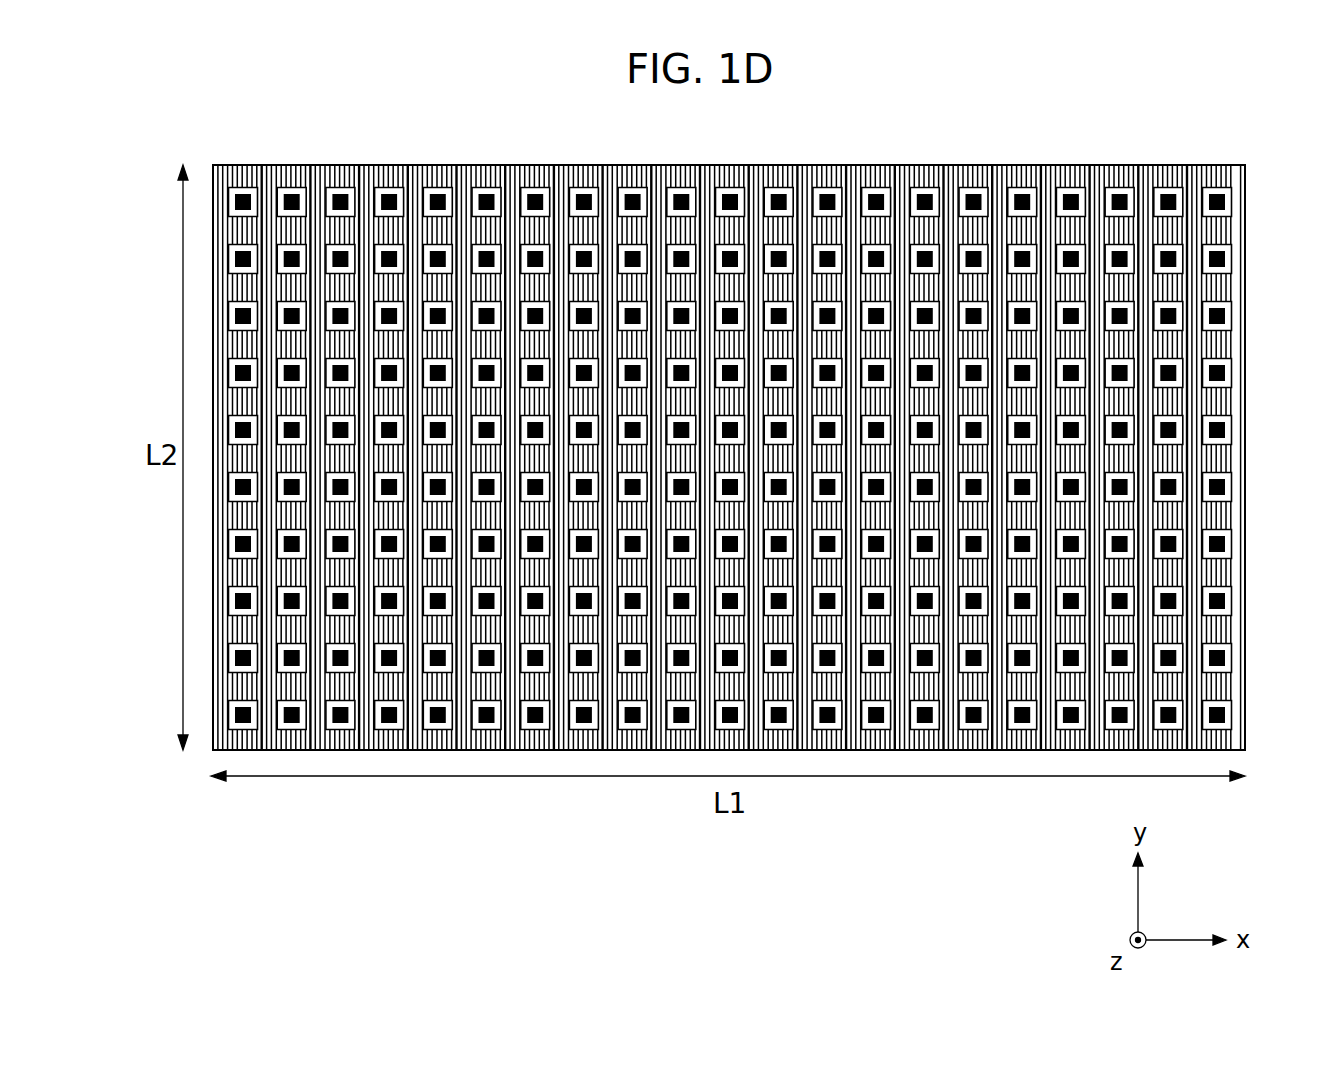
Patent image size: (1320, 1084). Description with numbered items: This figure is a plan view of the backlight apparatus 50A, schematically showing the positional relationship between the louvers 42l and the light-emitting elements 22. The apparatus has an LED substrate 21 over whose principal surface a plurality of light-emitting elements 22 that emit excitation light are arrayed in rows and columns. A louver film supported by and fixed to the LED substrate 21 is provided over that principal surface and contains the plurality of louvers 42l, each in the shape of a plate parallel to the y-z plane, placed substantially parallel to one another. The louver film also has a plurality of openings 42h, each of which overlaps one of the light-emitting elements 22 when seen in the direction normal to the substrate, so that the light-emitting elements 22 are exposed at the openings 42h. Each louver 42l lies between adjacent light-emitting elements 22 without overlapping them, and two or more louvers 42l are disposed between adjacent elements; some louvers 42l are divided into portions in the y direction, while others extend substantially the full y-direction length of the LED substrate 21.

The backlight apparatus 50A is at (747, 398).
The LED substrate 21 is at (729, 412).
The light-emitting element 22 is at (963, 188).
The opening 42h is at (911, 174).
The louver 42l is at (820, 168).